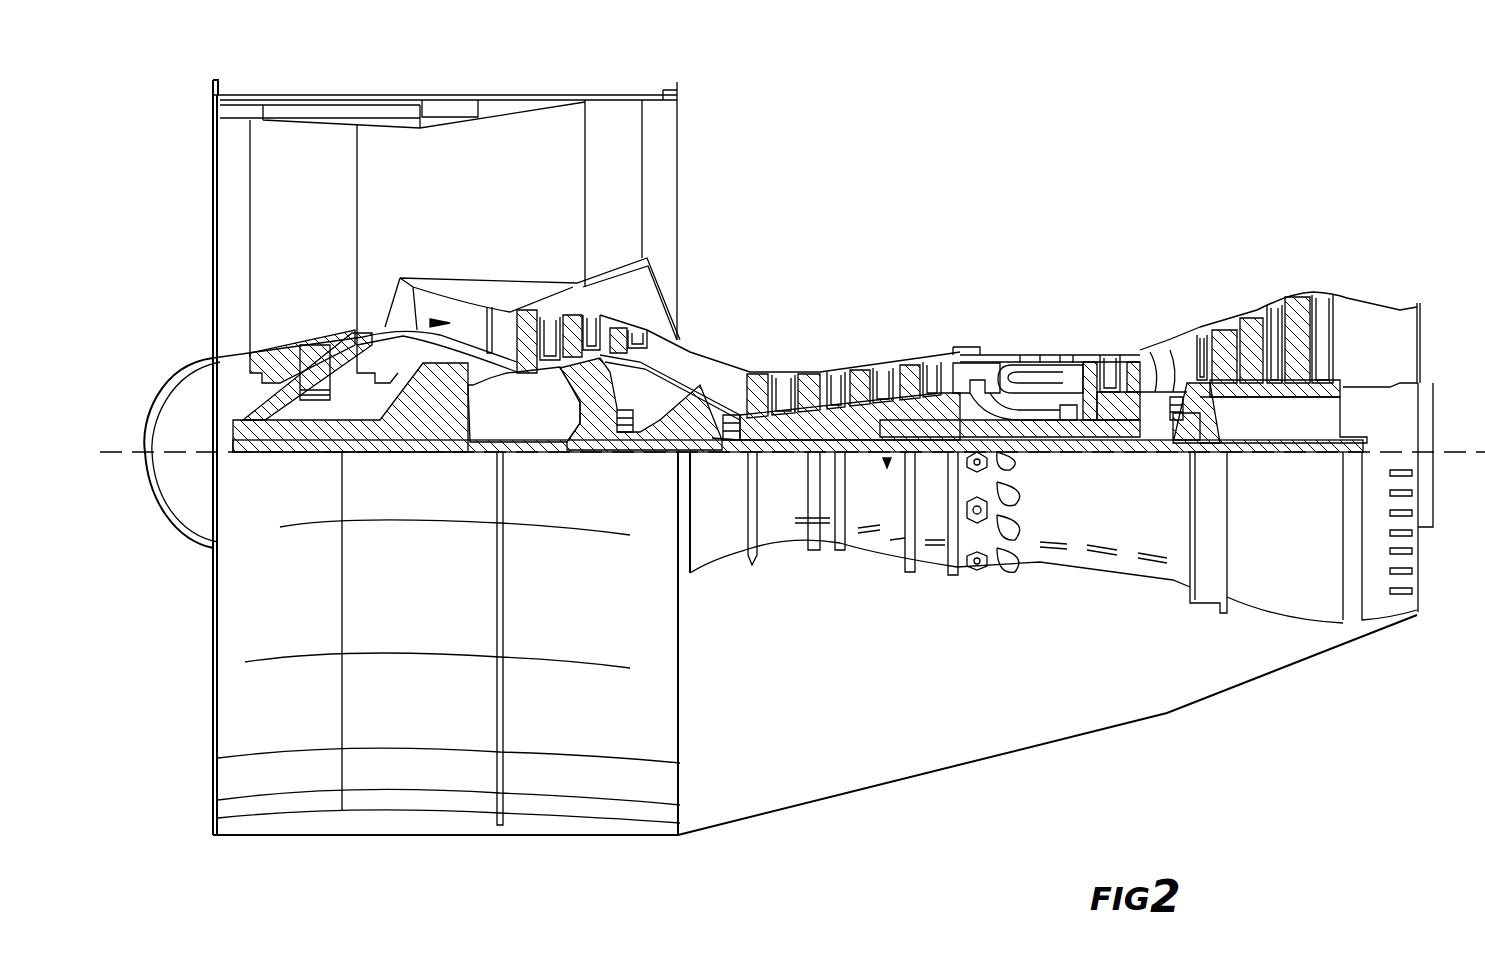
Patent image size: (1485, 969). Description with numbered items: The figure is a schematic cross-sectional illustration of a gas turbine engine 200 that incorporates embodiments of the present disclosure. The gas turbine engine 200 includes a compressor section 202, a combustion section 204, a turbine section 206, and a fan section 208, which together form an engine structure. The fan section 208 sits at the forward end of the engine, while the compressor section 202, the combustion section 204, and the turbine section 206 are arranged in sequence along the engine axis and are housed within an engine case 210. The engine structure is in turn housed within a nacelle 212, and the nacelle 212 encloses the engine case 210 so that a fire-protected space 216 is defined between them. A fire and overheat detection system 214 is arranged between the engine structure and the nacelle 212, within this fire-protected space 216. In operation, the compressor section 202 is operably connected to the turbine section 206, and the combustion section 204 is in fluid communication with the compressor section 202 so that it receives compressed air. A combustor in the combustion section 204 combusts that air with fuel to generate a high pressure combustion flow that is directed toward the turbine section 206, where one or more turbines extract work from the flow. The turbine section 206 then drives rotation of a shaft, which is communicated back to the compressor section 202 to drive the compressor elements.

The gas turbine engine 200 is at (1188, 158).
The compressor section 202 is at (813, 328).
The combustion section 204 is at (1007, 323).
The turbine section 206 is at (1252, 273).
The fan section 208 is at (303, 80).
The engine case 210 is at (938, 570).
The nacelle 212 is at (999, 762).
The fire and overheat detection system 214 is at (1053, 553).
The fire-protected space 216 is at (1061, 555).